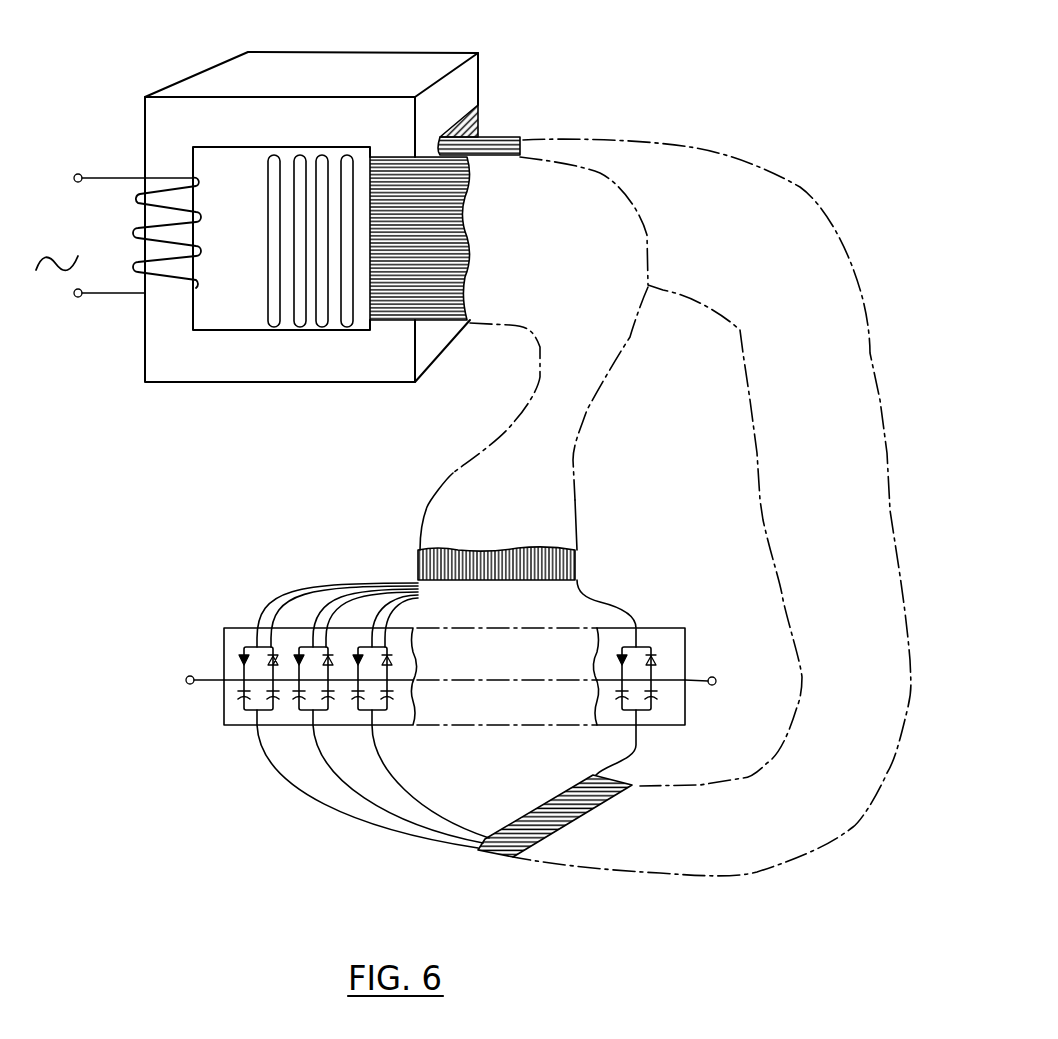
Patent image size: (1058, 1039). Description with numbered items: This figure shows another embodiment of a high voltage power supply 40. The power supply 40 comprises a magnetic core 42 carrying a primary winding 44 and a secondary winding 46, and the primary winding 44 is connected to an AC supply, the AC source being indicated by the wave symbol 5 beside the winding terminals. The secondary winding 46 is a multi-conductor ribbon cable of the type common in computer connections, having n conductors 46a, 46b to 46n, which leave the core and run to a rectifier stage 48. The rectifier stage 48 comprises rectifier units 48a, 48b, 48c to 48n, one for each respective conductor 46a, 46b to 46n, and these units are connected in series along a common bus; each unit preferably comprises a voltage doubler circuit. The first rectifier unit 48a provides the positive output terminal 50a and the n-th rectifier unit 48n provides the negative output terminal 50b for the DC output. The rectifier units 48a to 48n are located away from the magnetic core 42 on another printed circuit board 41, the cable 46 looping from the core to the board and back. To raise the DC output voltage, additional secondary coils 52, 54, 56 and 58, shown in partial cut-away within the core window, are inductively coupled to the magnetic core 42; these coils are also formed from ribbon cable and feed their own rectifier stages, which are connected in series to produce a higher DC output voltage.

The high voltage power supply 40 is at (606, 51).
The magnetic core 42 is at (402, 63).
The primary winding 44 is at (105, 177).
The AC supply 5 is at (57, 288).
The secondary coil 52 is at (346, 330).
The secondary coil 54 is at (323, 330).
The secondary coil 56 is at (300, 330).
The secondary winding 58 is at (273, 330).
The secondary winding 46 is at (586, 382).
The conductor 46a is at (391, 588).
The conductor 46b is at (378, 593).
The conductor 46n is at (595, 597).
The rectifier stage 48 is at (344, 630).
The rectifier unit 48a is at (271, 640).
The rectifier unit 48b is at (326, 640).
The rectifier module 48c is at (406, 619).
The rectifier unit 48n is at (645, 647).
The positive output terminal 50a is at (190, 674).
The negative output terminal 50b is at (716, 683).
The printed circuit board 41 is at (687, 730).